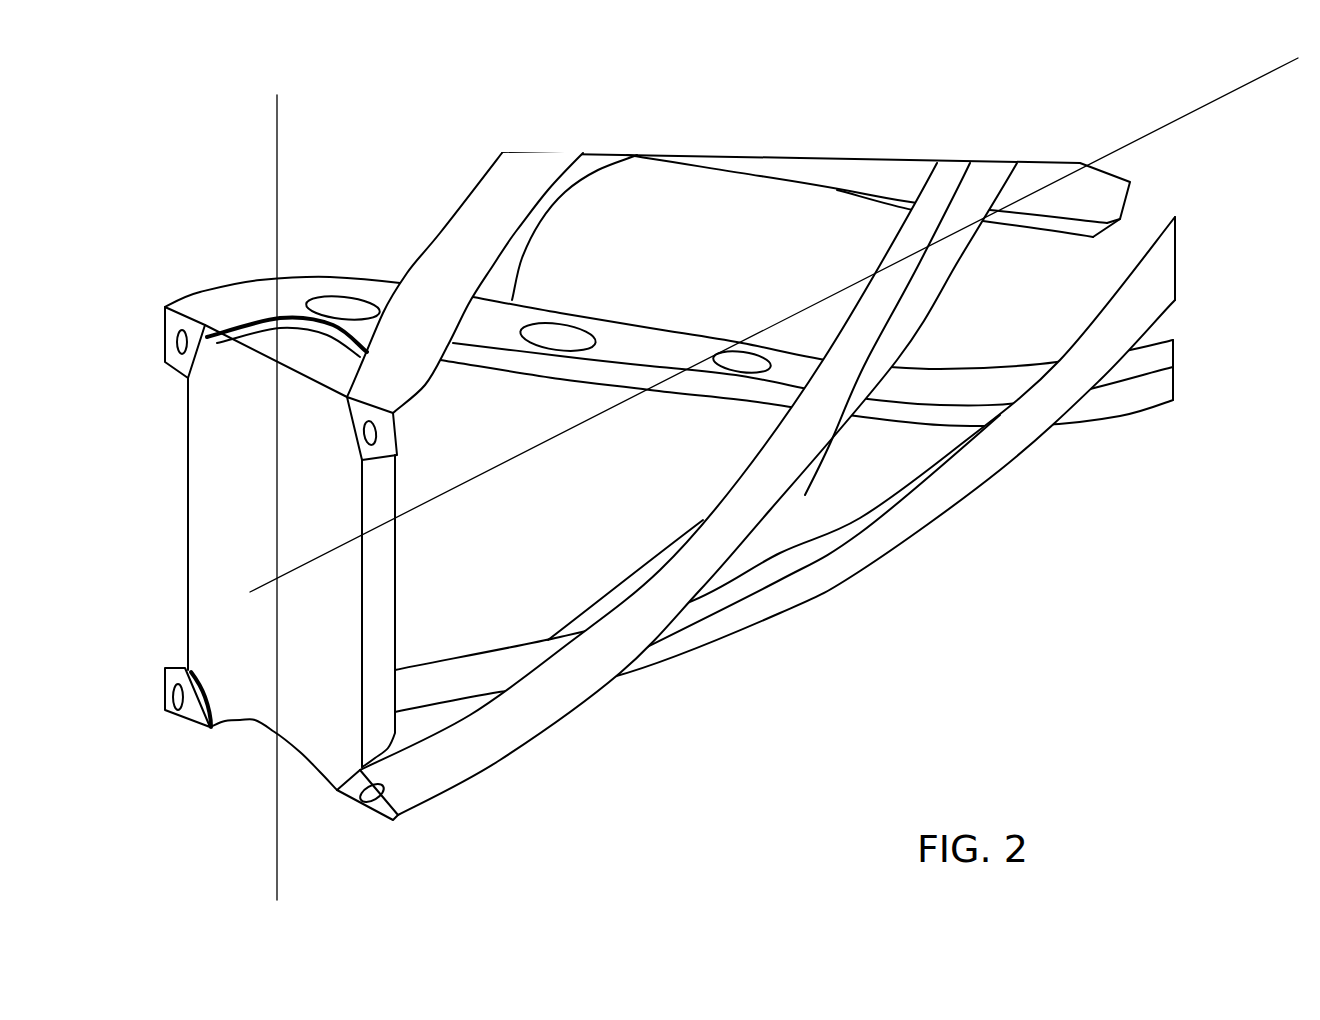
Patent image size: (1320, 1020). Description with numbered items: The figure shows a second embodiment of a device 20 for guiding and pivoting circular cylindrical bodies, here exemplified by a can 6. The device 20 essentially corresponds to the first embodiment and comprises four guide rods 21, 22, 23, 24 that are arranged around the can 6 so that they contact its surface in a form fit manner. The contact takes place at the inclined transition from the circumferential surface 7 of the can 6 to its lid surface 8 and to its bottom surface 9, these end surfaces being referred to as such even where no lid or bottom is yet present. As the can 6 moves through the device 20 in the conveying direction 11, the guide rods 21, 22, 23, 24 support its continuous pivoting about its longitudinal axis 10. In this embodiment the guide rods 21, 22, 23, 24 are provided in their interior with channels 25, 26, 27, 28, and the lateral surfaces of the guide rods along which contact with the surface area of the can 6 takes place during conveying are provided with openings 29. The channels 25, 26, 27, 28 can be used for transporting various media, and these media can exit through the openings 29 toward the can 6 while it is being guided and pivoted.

The can 6 is at (200, 626).
The circumferential surface 7 is at (185, 545).
The lid surface 8 is at (253, 348).
The bottom surface 9 is at (240, 723).
The longitudinal axis 10 is at (276, 855).
The conveying direction 11 is at (1130, 133).
The device 20 is at (1220, 222).
The guide rod 21 is at (550, 732).
The guide rod 22 is at (880, 572).
The guide rod 23 is at (497, 238).
The guide rod 24 is at (205, 290).
The channel 25 is at (372, 803).
The channel 26 is at (165, 698).
The channel 27 is at (386, 432).
The channel 28 is at (172, 342).
The openings 29 is at (575, 320).